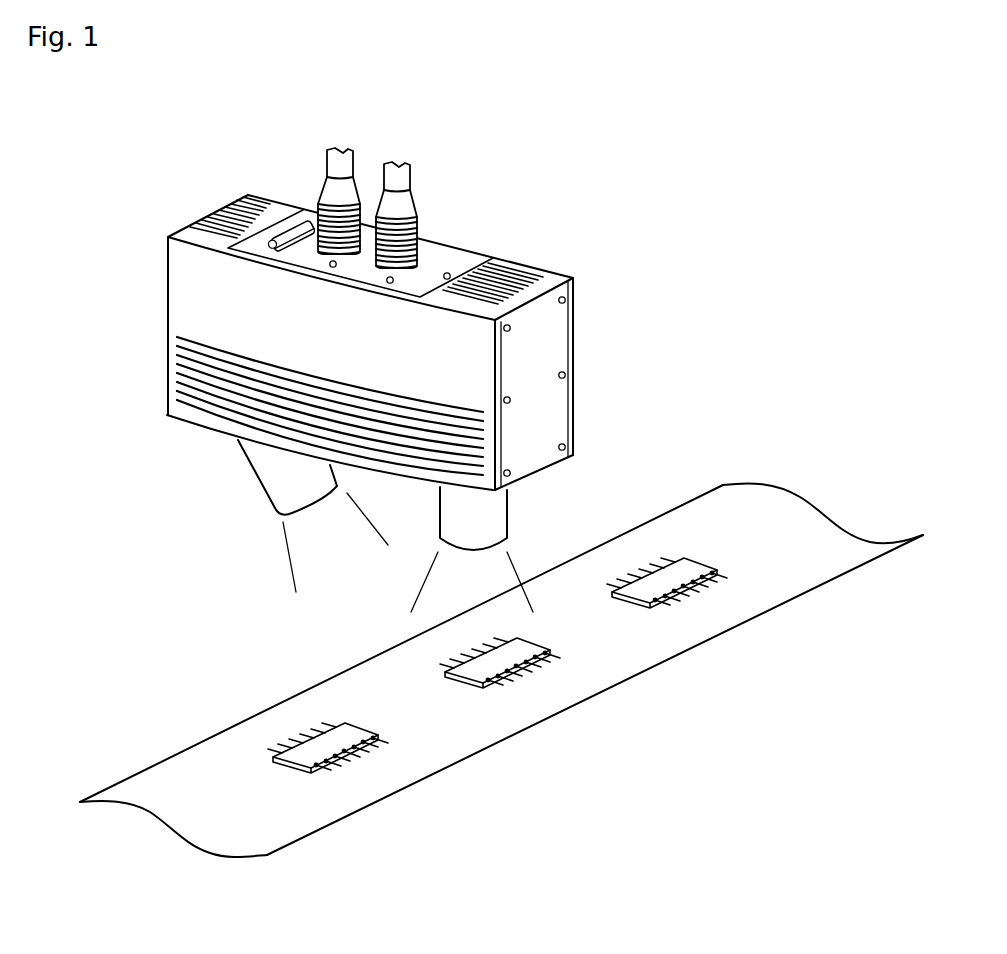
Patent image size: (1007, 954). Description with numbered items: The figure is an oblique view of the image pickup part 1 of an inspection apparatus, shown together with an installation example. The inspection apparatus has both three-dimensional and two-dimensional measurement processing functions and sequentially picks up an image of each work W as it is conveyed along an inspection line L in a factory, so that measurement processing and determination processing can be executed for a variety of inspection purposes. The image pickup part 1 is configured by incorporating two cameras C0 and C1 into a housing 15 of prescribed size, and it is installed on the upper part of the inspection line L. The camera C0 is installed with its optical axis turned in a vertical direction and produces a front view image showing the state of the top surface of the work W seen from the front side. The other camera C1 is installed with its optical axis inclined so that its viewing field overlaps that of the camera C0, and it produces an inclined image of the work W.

The image pickup part 1 is at (455, 242).
The housing 15 is at (562, 335).
The camera C1 is at (280, 488).
The camera C0 is at (498, 518).
The work W is at (693, 560).
The inspection line L is at (718, 625).